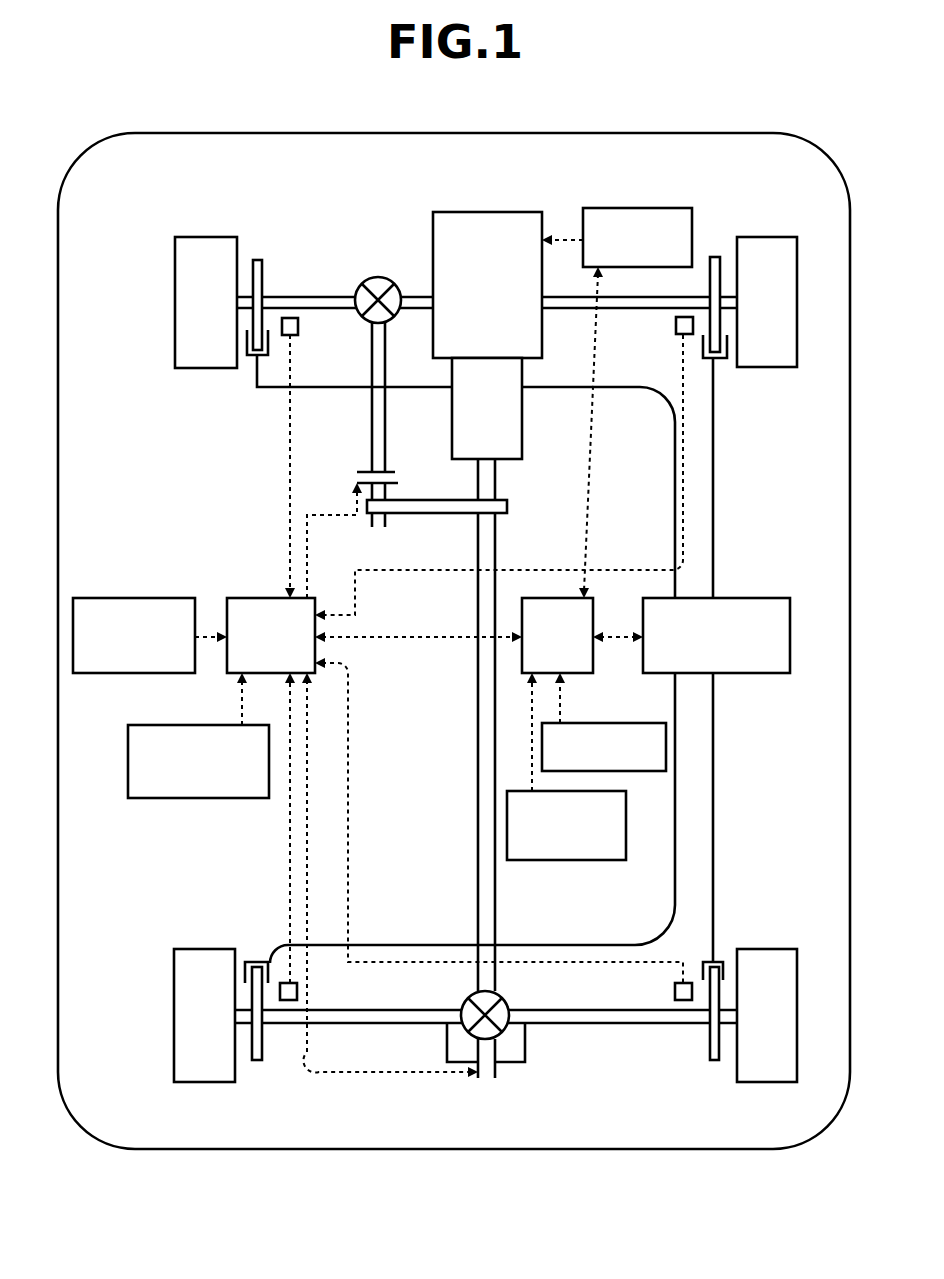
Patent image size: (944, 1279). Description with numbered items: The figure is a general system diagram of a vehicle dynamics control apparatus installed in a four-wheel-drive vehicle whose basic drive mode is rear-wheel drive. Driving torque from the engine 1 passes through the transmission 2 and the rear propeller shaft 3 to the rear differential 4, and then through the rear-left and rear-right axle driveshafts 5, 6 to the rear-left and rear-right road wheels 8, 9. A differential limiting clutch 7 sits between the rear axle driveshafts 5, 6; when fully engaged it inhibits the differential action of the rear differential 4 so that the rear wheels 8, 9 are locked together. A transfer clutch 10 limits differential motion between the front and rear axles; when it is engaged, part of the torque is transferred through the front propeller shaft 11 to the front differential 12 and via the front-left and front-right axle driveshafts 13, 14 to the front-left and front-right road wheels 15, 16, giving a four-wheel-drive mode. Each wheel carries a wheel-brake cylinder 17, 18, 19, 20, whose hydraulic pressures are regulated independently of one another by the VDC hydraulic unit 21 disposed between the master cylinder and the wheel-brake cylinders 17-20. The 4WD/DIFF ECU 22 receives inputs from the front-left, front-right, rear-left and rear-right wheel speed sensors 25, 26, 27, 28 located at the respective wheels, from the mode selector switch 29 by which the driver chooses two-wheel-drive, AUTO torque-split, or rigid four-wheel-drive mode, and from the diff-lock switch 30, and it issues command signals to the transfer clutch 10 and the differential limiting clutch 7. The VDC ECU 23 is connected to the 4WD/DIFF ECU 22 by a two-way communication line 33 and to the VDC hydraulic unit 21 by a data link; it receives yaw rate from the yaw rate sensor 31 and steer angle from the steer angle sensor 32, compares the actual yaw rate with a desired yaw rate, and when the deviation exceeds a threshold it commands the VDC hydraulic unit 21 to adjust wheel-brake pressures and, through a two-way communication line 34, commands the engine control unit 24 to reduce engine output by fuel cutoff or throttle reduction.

The engine 1 is at (490, 212).
The transmission 2 is at (522, 428).
The rear propeller shaft 3 is at (478, 795).
The rear differential 4 is at (507, 999).
The rear-left axle driveshaft 5 is at (355, 1010).
The rear-right axle driveshaft 6 is at (652, 1023).
The differential limiting clutch 7 is at (497, 1065).
The rear-left road wheel 8 is at (205, 949).
The rear-right road wheel 9 is at (780, 949).
The transfer clutch 10 is at (396, 472).
The front propeller shaft 11 is at (372, 434).
The front differential 12 is at (378, 277).
The front-left axle driveshaft 13 is at (300, 297).
The front-right axle driveshaft 14 is at (618, 308).
The front-left road wheel 15 is at (210, 237).
The front-right road wheel 16 is at (770, 237).
The front-left wheel-brake cylinder 17 is at (257, 360).
The front-right wheel-brake cylinder 18 is at (720, 358).
The rear-left wheel-brake cylinder 19 is at (257, 967).
The rear-right wheel-brake cylinder 20 is at (720, 962).
The VDC hydraulic unit 21 is at (762, 598).
The 4WD/DIFF ECU 22 is at (250, 598).
The VDC ECU 23 is at (543, 598).
The engine control unit 24 is at (652, 208).
The front-left wheel speed sensor 25 is at (298, 327).
The front-right wheel speed sensor 26 is at (683, 334).
The rear-left wheel speed sensor 27 is at (290, 1000).
The rear-right wheel speed sensor 28 is at (675, 992).
The mode selector switch 29 is at (147, 598).
The diff-lock switch 30 is at (200, 798).
The yaw rate sensor 31 is at (600, 723).
The steer angle sensor 32 is at (560, 860).
The two-way communication line 33 is at (405, 642).
The two-way communication line 34 is at (592, 485).